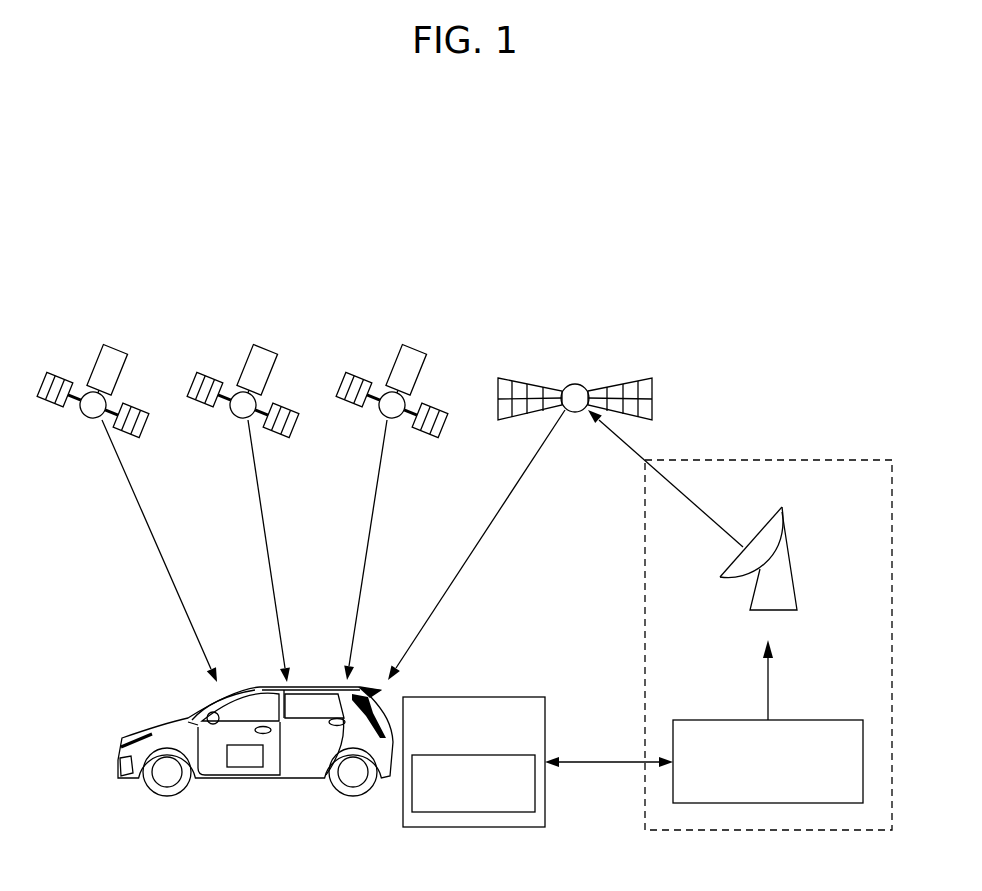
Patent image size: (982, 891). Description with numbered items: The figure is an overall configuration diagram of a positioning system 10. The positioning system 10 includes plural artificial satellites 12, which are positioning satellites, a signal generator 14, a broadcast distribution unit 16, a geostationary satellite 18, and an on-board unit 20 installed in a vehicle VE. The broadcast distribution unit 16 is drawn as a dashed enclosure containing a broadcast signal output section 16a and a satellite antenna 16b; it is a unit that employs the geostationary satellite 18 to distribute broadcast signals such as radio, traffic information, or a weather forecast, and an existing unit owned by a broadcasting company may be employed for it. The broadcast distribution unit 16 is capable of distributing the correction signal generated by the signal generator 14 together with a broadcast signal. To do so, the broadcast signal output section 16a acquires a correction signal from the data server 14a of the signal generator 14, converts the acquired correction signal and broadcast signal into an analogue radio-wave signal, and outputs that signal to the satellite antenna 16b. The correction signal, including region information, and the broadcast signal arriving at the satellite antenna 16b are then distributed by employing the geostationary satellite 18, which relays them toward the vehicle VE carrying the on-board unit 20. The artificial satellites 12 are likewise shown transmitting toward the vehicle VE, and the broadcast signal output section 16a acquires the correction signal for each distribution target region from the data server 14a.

The positioning system 10 is at (653, 247).
The artificial satellites 12 is at (119, 346).
The signal generator 14 is at (472, 697).
The data server 14a is at (470, 812).
The broadcast distribution unit 16 is at (771, 458).
The broadcast signal output section 16a is at (763, 803).
The satellite antenna 16b is at (783, 550).
The geostationary satellite 18 is at (573, 383).
The on-board unit 20 is at (245, 758).
The vehicle VE is at (190, 712).